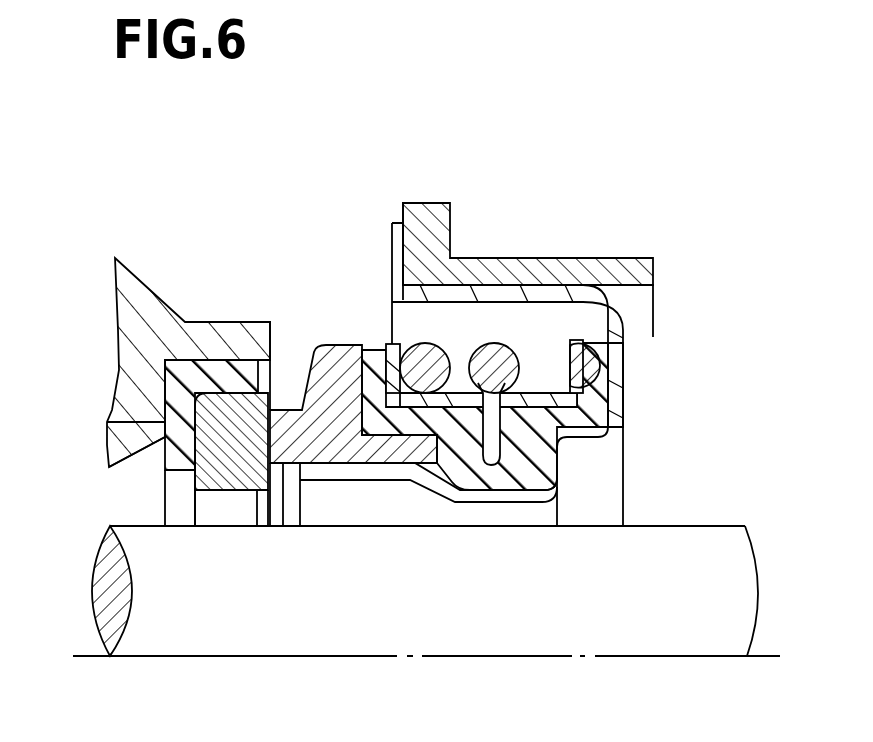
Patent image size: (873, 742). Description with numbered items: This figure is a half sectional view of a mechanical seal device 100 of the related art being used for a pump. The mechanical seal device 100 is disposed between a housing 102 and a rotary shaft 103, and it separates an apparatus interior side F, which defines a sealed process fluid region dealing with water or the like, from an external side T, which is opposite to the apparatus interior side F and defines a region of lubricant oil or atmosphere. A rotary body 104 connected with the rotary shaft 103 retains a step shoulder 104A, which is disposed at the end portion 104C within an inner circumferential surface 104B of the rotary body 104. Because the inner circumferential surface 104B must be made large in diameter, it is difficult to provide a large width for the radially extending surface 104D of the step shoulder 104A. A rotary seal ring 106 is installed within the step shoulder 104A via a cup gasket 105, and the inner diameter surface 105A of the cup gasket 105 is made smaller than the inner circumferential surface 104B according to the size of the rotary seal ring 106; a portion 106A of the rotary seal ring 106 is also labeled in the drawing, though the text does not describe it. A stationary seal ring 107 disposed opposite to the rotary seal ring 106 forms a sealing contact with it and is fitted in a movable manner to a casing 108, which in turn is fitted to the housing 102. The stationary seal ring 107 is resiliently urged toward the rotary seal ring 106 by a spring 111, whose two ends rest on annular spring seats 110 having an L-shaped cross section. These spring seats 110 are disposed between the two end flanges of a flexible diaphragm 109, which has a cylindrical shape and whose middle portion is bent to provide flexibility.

The mechanical seal device 100 is at (382, 246).
The housing 102 is at (593, 266).
The rotary shaft 103 is at (682, 547).
The rotary body 104 is at (227, 350).
The step shoulder 104A is at (212, 520).
The inner circumferential surface 104B is at (140, 422).
The end portion 104C is at (270, 350).
The radially extending surface 104D is at (109, 466).
The cup gasket 105 is at (165, 387).
The inner diameter surface 105A is at (167, 495).
The rotary seal ring 106 is at (232, 480).
The seal lip 106A is at (281, 500).
The stationary seal ring 107 is at (338, 440).
The casing 108 is at (617, 388).
The flexible diaphragm 109 is at (483, 475).
The spring seat 110 is at (389, 344).
The spring 111 is at (430, 358).
The apparatus interior side F is at (313, 276).
The external side T is at (798, 492).